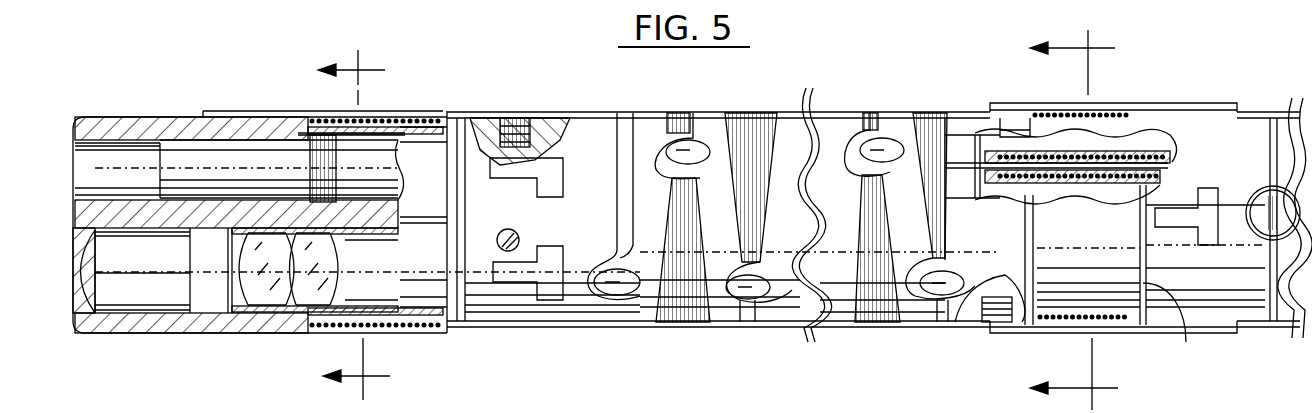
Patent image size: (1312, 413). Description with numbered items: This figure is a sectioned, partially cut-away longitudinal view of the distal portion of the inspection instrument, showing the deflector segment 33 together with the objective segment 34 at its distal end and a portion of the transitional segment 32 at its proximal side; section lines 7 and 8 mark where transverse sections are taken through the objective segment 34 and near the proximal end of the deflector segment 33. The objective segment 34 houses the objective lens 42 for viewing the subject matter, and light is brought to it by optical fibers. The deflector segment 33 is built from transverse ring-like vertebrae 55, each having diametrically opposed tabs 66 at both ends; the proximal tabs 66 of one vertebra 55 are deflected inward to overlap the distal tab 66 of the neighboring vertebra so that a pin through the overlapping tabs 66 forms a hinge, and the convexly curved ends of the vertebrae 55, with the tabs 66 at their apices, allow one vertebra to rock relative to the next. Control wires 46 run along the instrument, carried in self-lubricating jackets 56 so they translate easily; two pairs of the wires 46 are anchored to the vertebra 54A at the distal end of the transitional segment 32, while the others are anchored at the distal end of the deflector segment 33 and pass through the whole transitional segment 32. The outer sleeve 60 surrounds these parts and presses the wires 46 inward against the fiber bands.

The transitional segment 32 is at (1273, 352).
The deflector segment 33 is at (521, 100).
The objective segment 34 is at (155, 106).
The objective lens 42 is at (257, 272).
The wires 46 is at (520, 172).
The vertebra at distal end of transitional segment 54A is at (1181, 326).
The vertebrae of deflector segment 55 is at (645, 137).
The self-lubricating jackets 56 is at (1085, 155).
The outer sleeve 60 is at (1300, 130).
The tabs 66 is at (678, 140).
The section line 7- 7 is at (354, 224).
The section line 8- 8 is at (1074, 215).